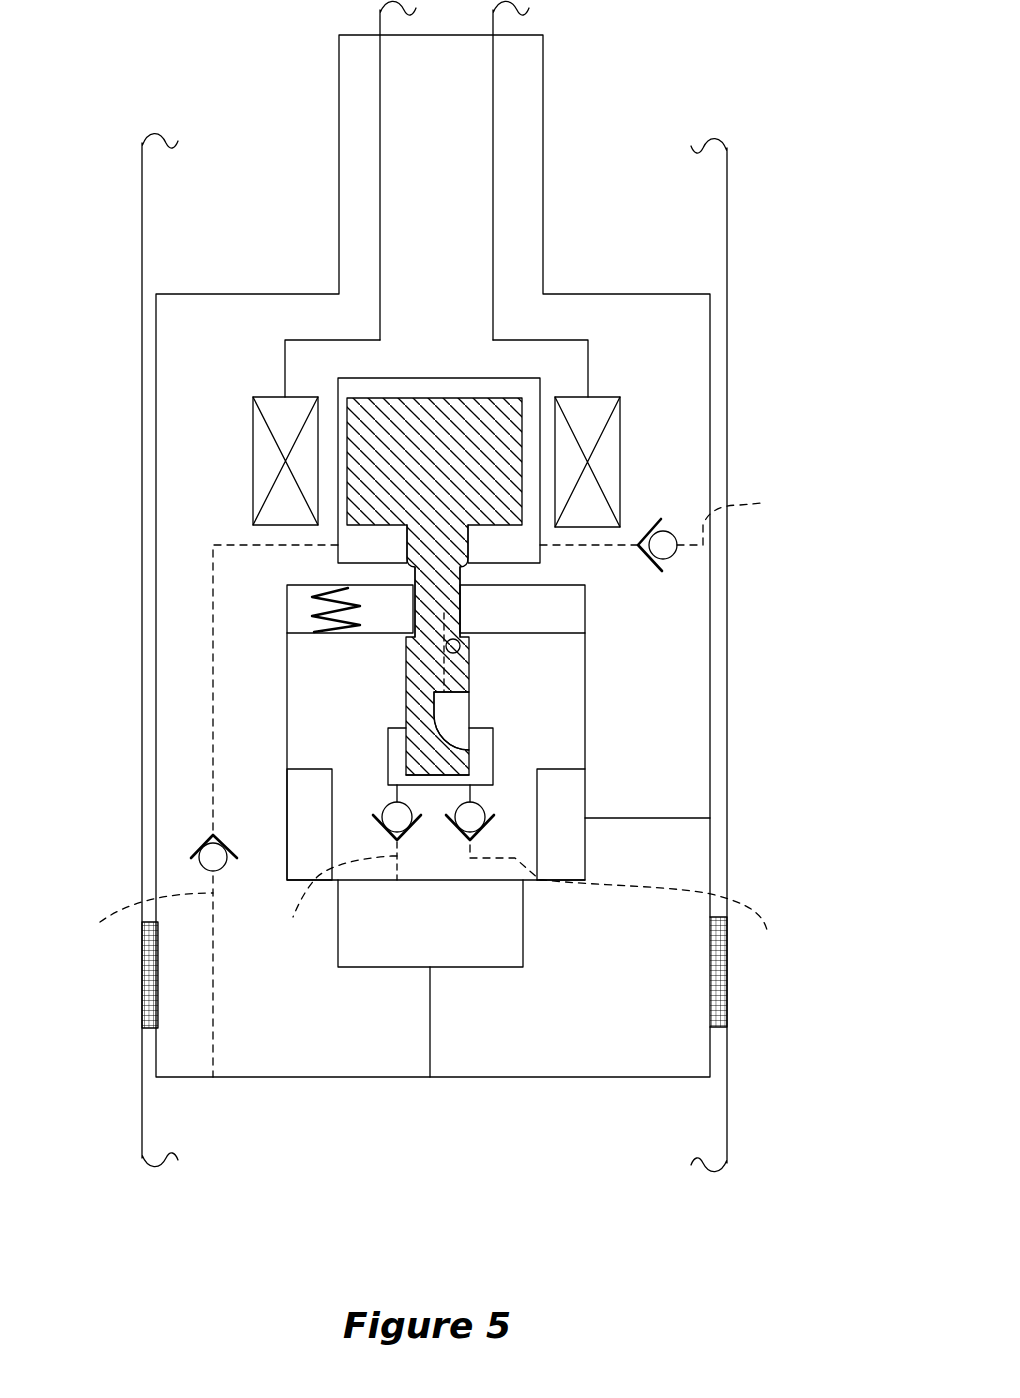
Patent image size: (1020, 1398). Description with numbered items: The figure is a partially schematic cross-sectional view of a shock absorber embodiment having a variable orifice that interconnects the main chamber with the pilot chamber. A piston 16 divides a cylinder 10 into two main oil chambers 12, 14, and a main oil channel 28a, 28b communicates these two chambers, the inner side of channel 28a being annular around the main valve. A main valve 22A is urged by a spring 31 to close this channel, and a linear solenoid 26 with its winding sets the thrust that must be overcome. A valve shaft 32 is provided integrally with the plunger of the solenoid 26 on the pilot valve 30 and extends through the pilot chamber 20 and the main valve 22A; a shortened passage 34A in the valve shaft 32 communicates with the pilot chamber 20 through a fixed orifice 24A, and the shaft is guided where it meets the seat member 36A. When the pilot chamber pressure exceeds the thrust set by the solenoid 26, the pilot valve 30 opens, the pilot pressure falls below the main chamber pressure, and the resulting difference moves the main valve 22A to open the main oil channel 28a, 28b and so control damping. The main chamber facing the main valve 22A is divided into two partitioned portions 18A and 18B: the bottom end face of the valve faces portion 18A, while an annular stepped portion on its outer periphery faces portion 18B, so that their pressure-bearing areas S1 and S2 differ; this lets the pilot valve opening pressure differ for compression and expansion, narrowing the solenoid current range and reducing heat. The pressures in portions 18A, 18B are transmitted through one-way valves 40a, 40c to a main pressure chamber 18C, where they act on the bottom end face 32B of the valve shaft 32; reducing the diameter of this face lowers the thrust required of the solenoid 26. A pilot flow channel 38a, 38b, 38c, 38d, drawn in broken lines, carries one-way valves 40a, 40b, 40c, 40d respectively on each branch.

The cylinder 10 is at (727, 232).
The main oil chamber 12 is at (278, 212).
The main oil chamber 14 is at (245, 1215).
The piston 16 is at (710, 317).
The main chamber portion 18A is at (432, 960).
The main chamber portion 18B is at (575, 880).
The main pressure chamber 18C is at (396, 800).
The pilot chamber 20 is at (300, 597).
The main valve 22A is at (565, 632).
The fixed orifice 24A is at (455, 650).
The linear solenoid 26 is at (463, 398).
The main oil channel 28a is at (673, 820).
The main oil channel 28b is at (430, 998).
The pilot valve 30 is at (399, 553).
The spring 31 is at (313, 613).
The valve shaft 32 is at (407, 662).
The bottom end face of valve shaft 32B is at (437, 777).
The passage 34A is at (458, 718).
The valve seat member 36A is at (493, 738).
The pilot flow channel 38a is at (331, 903).
The pilot flow channel 38b is at (516, 782).
The pilot flow channel 38c is at (633, 936).
The pilot flow channel 38d is at (142, 960).
The one-way valve 40a is at (387, 762).
The one-way valve 40b is at (668, 535).
The one-way valve 40c is at (470, 843).
The one-way valve 40d is at (207, 846).
The pressure-bearing area S1 is at (472, 845).
The pressure-bearing area S2 is at (557, 777).